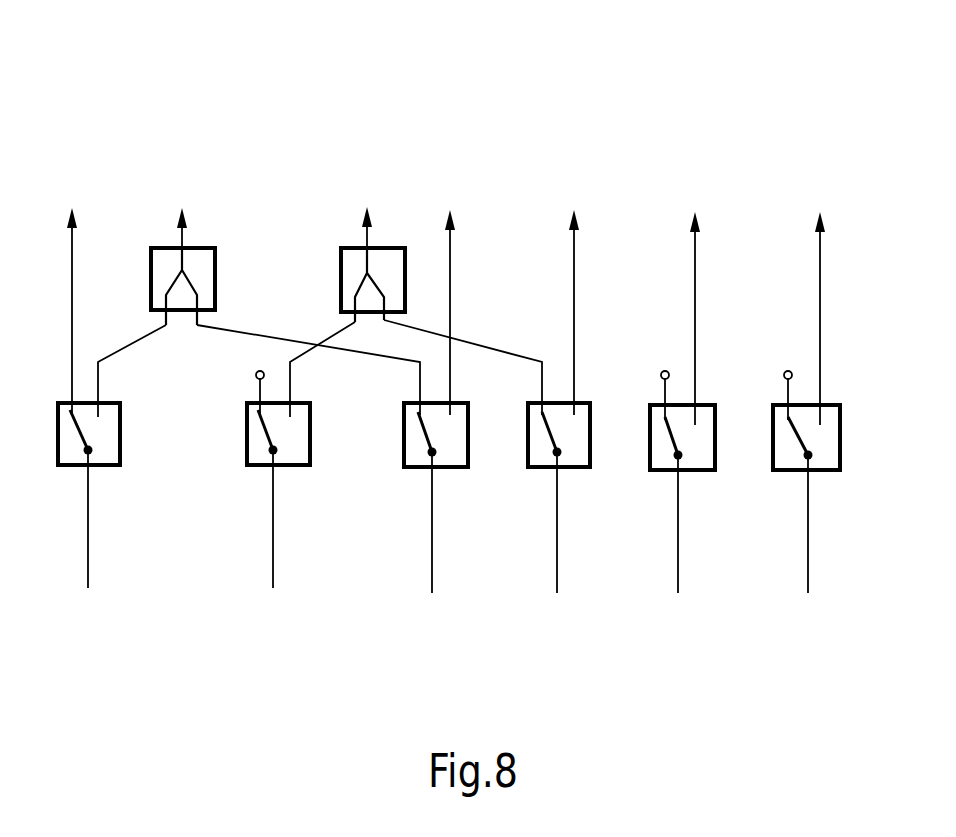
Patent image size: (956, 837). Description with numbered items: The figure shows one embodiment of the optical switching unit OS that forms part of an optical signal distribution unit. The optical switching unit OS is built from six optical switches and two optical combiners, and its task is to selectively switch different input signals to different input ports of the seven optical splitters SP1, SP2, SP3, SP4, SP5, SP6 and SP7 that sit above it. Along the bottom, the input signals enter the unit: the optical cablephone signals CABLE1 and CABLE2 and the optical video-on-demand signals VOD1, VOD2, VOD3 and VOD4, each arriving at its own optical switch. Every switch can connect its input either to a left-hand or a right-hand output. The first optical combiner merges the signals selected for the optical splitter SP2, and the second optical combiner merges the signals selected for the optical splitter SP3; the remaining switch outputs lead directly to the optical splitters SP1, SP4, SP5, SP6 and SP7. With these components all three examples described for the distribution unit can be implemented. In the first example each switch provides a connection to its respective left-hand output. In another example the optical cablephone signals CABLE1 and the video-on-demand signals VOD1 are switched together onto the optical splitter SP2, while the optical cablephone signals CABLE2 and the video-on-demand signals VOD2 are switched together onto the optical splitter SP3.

The optical switching unit OS is at (222, 51).
The optical splitter SP1 is at (75, 286).
The optical splitter SP2 is at (183, 242).
The optical splitter SP3 is at (373, 241).
The optical splitter SP4 is at (461, 287).
The optical splitter SP5 is at (583, 287).
The optical splitter SP6 is at (704, 293).
The optical splitter SP7 is at (827, 293).
The optical cablephone signals CABLE1 is at (85, 527).
The optical cablephone signals CABLE2 is at (268, 511).
The optical video-on-demand signals VOD1 is at (430, 527).
The optical video-on-demand signals VOD2 is at (553, 527).
The optical video-on-demand signals VOD3 is at (689, 511).
The optical video-on-demand signals VOD4 is at (815, 511).